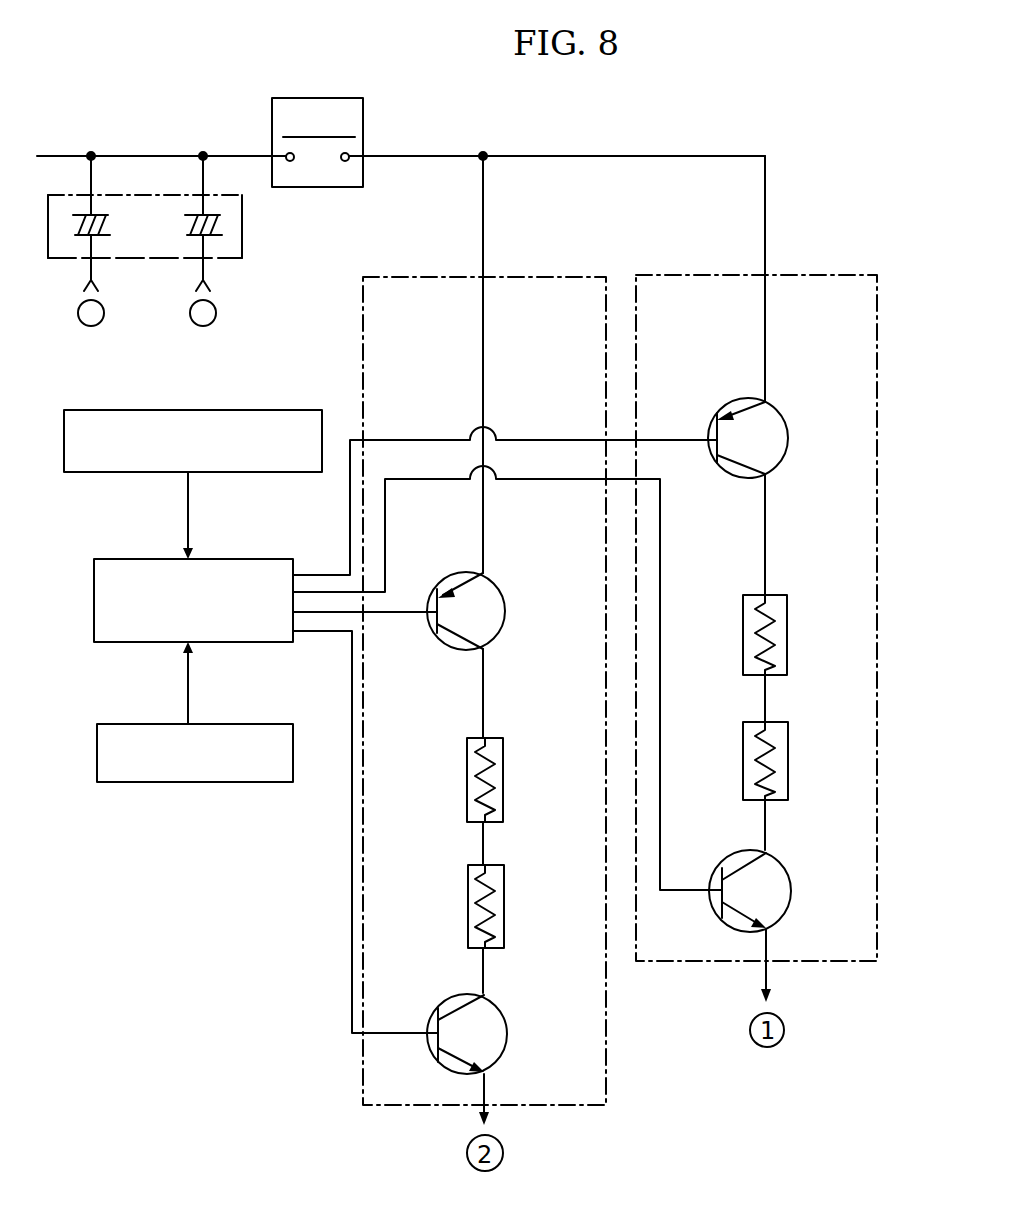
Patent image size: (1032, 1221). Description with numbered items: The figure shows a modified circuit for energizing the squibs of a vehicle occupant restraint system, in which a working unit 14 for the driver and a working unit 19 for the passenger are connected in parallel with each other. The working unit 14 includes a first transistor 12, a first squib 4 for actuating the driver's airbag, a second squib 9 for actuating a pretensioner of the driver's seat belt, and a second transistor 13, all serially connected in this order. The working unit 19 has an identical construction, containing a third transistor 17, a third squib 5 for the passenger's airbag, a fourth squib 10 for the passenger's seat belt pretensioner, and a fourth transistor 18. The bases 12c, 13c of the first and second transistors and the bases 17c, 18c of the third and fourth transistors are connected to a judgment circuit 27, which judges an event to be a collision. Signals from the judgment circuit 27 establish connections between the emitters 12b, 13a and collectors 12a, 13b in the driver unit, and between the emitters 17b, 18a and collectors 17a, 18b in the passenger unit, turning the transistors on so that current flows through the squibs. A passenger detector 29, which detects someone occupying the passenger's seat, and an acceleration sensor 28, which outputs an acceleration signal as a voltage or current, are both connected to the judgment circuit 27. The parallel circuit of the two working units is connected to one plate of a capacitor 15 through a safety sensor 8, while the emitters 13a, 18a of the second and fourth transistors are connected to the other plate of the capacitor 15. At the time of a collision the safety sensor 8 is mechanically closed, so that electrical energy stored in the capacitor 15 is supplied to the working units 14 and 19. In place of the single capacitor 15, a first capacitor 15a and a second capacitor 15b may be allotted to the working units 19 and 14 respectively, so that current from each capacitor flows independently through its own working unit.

The safety sensor 8 is at (340, 97).
The capacitor 15 is at (242, 222).
The first capacitor 15a is at (105, 238).
The second capacitor 15b is at (222, 238).
The passenger detector 29 is at (248, 410).
The judgment circuit 27 is at (260, 559).
The acceleration sensor 28 is at (260, 724).
The working unit for driver 14 is at (507, 277).
The working unit for passenger 19 is at (810, 275).
The first transistor 12 is at (475, 600).
The collector of first transistor 12a is at (486, 649).
The emitter of first transistor 12b is at (485, 573).
The base of first transistor 12c is at (433, 628).
The first squib 4 is at (503, 760).
The second squib 9 is at (504, 905).
The second transistor 13 is at (476, 1027).
The emitter of second transistor 13a is at (487, 1072).
The collector of second transistor 13b is at (486, 995).
The base of second transistor 13c is at (434, 1045).
The third transistor 17 is at (754, 436).
The collector of third transistor 17a is at (767, 474).
The emitter of third transistor 17b is at (767, 402).
The base of third transistor 17c is at (710, 445).
The third squib 5 is at (787, 615).
The fourth squib 10 is at (788, 745).
The fourth transistor 18 is at (754, 880).
The emitter of fourth transistor 18a is at (768, 928).
The collector of fourth transistor 18b is at (768, 852).
The base of fourth transistor 18c is at (714, 898).